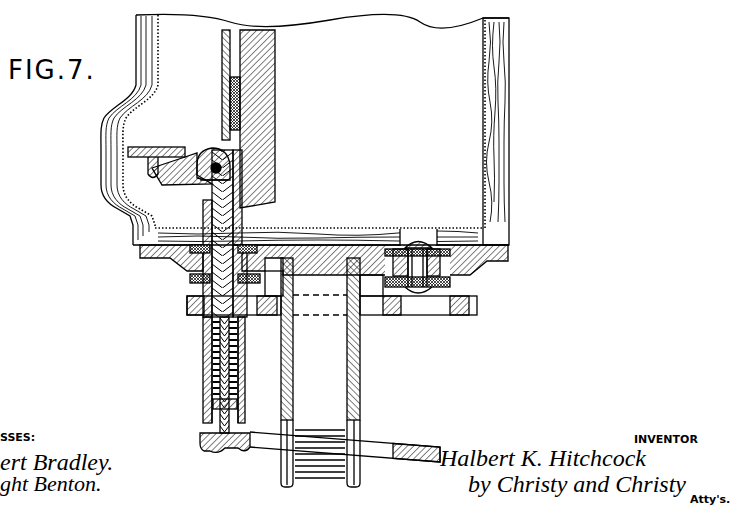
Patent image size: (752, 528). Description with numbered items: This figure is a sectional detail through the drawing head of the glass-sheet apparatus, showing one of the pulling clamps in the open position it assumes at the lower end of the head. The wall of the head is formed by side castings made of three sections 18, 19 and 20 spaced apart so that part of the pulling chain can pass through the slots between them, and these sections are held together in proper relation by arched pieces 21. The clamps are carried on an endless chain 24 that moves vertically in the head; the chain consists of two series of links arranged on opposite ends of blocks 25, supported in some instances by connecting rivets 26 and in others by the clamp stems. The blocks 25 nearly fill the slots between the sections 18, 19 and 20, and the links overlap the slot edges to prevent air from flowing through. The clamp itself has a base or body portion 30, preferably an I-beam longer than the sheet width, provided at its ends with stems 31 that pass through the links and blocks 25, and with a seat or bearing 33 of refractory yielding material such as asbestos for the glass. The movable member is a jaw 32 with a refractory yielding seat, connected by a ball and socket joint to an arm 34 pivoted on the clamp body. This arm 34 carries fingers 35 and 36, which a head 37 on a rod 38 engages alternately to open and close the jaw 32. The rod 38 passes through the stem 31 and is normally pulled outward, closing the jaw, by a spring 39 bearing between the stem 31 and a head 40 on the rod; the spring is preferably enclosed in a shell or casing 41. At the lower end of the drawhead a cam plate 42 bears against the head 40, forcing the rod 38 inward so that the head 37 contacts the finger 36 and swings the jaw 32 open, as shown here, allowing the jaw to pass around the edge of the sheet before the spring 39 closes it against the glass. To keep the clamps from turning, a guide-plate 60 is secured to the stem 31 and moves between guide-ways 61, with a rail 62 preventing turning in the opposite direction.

The side casting section 18 is at (170, 262).
The side casting section 19 is at (366, 278).
The side casting section 20 is at (500, 265).
The arched piece 21 is at (355, 424).
The endless chain 24 is at (437, 280).
The block 25 is at (455, 282).
The connecting rivet 26 is at (416, 238).
The base or body portion 30 is at (273, 87).
The stem 31 is at (242, 222).
The jaw 32 is at (160, 147).
The seat or bearing 33 is at (222, 93).
The arm 34 is at (177, 182).
The finger 35 is at (213, 181).
The finger 36 is at (212, 150).
The head 37 is at (233, 162).
The rod 38 is at (246, 396).
The spring 39 is at (203, 375).
The head 40 is at (212, 426).
The shell or casing 41 is at (244, 392).
The cam plate 42 is at (418, 447).
The guide-plate 60 is at (205, 296).
The guide-way 61 is at (187, 306).
The rail 62 is at (265, 315).